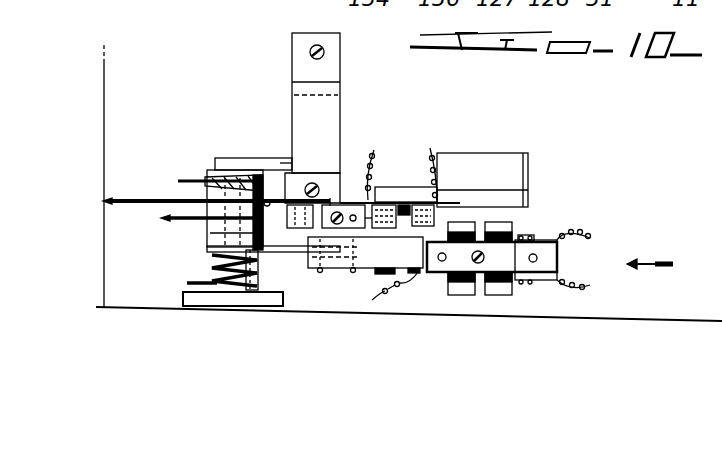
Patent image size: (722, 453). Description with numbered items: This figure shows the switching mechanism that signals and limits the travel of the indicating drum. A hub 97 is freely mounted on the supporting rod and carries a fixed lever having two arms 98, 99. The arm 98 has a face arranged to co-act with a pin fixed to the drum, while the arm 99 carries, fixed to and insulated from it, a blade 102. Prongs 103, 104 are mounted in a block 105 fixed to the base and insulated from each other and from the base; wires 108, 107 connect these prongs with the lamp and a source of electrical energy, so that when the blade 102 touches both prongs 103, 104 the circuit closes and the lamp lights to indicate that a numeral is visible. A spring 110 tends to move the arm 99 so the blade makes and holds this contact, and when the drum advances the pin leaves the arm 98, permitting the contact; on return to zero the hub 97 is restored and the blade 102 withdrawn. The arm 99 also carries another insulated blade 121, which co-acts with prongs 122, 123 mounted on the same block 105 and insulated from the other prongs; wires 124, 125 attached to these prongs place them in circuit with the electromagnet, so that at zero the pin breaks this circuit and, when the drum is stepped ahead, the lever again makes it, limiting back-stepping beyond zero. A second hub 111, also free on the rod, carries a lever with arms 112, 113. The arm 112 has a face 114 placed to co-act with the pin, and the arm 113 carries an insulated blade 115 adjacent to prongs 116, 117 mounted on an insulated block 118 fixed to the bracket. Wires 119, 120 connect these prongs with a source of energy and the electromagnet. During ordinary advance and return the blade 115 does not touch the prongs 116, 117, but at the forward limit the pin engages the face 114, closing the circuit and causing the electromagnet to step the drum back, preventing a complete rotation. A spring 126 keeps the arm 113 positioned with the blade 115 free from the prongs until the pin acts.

The hub 97 is at (207, 233).
The arm 98 is at (213, 220).
The arm 99 is at (303, 250).
The blade 102 is at (437, 252).
The prong 103 is at (466, 295).
The prong 104 is at (503, 296).
The block 105 is at (547, 258).
The wire 107 is at (590, 286).
The wire 108 is at (372, 301).
The spring 110 is at (185, 302).
The hub 111 is at (190, 180).
The arm 112 is at (112, 200).
The arm 113 is at (293, 184).
The face 114 is at (168, 218).
The blade 115 is at (373, 205).
The prong 116 is at (352, 230).
The prong 117 is at (410, 236).
The insulated block 118 is at (458, 170).
The wire 119 is at (375, 150).
The wire 120 is at (428, 148).
The blade 121 is at (525, 232).
The prong 122 is at (462, 222).
The prong 123 is at (500, 228).
The wire 124 is at (405, 187).
The wire 125 is at (591, 237).
The spring 126 is at (268, 177).